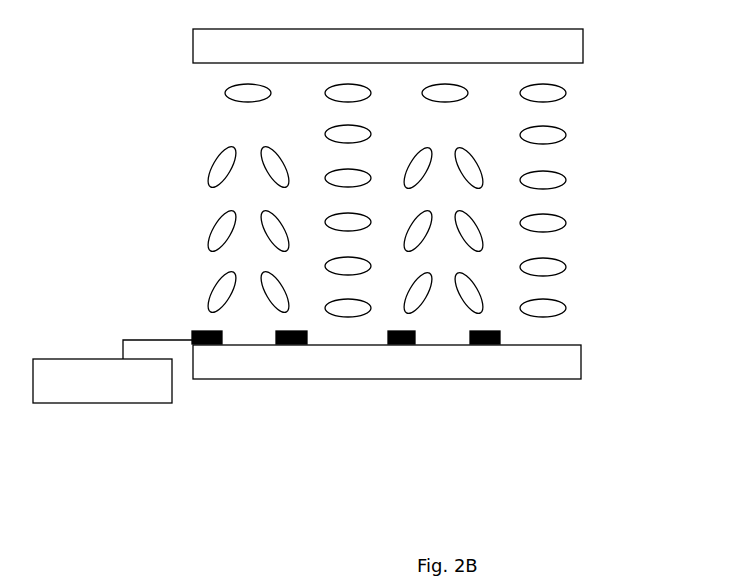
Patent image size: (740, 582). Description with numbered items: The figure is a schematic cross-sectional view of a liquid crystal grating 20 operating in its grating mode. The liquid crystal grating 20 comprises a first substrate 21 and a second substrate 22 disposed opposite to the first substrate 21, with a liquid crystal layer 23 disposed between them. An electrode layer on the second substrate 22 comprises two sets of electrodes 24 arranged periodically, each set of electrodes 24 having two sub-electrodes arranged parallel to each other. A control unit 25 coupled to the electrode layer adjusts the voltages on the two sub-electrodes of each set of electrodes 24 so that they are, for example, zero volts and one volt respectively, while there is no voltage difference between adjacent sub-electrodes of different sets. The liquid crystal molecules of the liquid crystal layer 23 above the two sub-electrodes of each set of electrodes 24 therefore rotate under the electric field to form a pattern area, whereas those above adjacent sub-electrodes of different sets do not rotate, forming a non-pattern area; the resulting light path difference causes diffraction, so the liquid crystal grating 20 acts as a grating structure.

The liquid crystal grating 20 is at (395, 221).
The first substrate 21 is at (583, 45).
The second substrate 22 is at (581, 362).
The liquid crystal layer 23 is at (429, 200).
The electrodes 24 is at (346, 378).
The control unit 25 is at (123, 403).